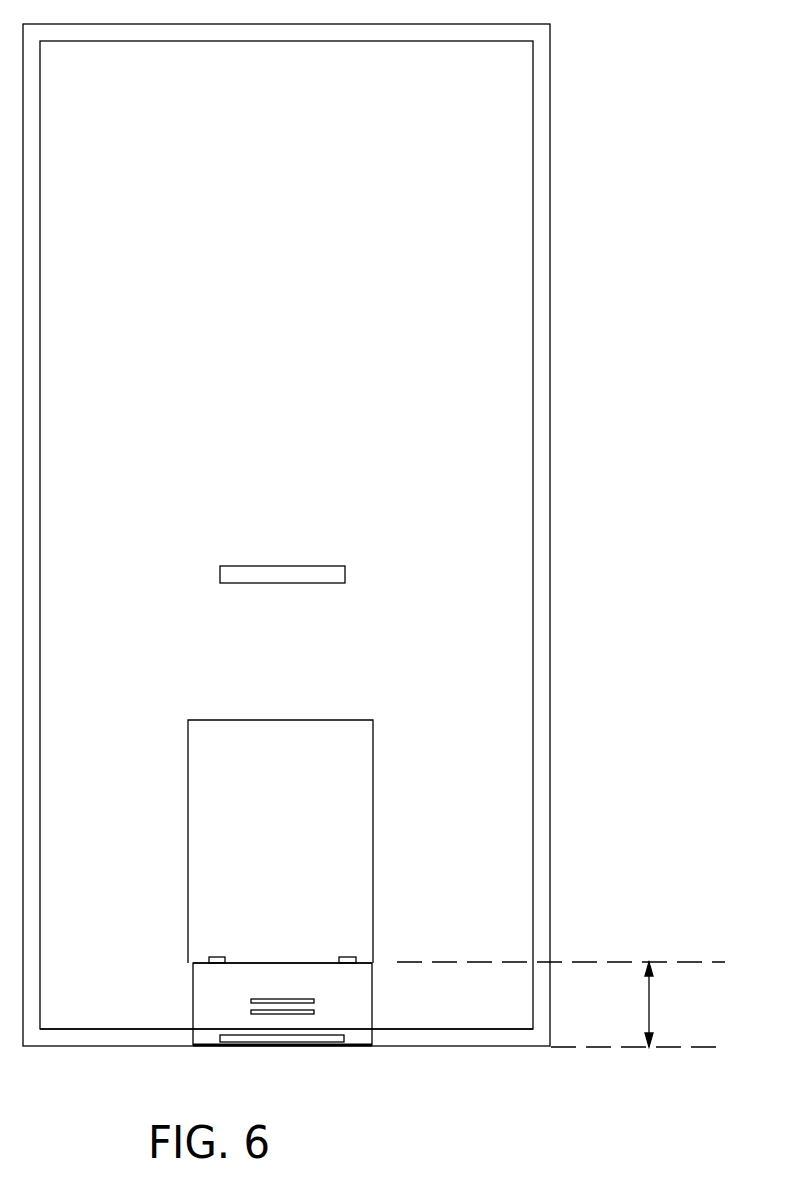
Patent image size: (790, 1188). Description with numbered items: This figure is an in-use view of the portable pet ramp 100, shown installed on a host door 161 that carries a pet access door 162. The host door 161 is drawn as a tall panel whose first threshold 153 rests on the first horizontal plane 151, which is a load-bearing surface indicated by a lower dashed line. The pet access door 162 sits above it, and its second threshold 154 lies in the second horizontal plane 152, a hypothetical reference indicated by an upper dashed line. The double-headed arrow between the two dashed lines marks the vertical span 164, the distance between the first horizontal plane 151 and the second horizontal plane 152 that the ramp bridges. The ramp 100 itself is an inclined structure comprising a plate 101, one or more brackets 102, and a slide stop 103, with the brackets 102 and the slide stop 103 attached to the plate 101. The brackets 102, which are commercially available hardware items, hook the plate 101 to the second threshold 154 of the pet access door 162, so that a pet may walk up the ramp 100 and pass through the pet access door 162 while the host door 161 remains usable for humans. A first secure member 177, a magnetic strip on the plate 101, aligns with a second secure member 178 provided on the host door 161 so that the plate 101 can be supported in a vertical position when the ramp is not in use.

The portable pet ramp 100 is at (198, 998).
The plate 101 is at (363, 980).
The brackets 102 is at (352, 962).
The slide stop 103 is at (250, 1001).
The first horizontal plane 151 is at (685, 1048).
The second horizontal plane 152 is at (620, 960).
The first threshold 153 is at (415, 1028).
The second threshold 154 is at (200, 962).
The host door 161 is at (517, 428).
The pet access door 162 is at (274, 719).
The vertical span 164 is at (650, 1005).
The first secure member 177 is at (328, 1037).
The second secure member 178 is at (345, 572).